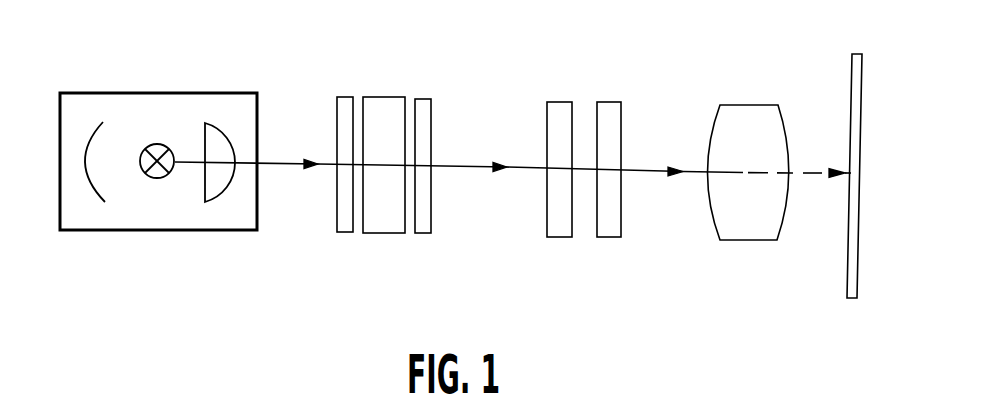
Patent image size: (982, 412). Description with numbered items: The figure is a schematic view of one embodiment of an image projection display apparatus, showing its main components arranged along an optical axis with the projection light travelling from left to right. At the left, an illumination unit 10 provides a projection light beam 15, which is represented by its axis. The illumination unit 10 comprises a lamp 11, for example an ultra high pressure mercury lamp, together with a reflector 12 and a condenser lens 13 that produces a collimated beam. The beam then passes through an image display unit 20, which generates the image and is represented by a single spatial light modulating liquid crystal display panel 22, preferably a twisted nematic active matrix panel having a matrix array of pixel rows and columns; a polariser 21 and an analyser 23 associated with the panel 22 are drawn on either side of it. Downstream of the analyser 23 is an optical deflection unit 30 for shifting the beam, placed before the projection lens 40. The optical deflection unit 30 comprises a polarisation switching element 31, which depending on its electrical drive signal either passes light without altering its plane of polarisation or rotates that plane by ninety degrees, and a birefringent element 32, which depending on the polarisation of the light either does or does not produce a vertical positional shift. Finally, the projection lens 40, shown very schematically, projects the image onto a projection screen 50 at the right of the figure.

The illumination unit 10 is at (165, 72).
The lamp 11 is at (157, 178).
The reflector 12 is at (102, 200).
The condenser lens 13 is at (213, 202).
The projection light beam 15 is at (275, 167).
The image display unit 20 is at (403, 74).
The first polarizer 21 is at (340, 233).
The liquid crystal display panel 22 is at (385, 233).
The analyser 23 is at (425, 233).
The optical deflection unit 30 is at (602, 78).
The polarisation switching element 31 is at (562, 237).
The birefringent element 32 is at (607, 237).
The projection lens 40 is at (754, 82).
The projection screen 50 is at (852, 100).